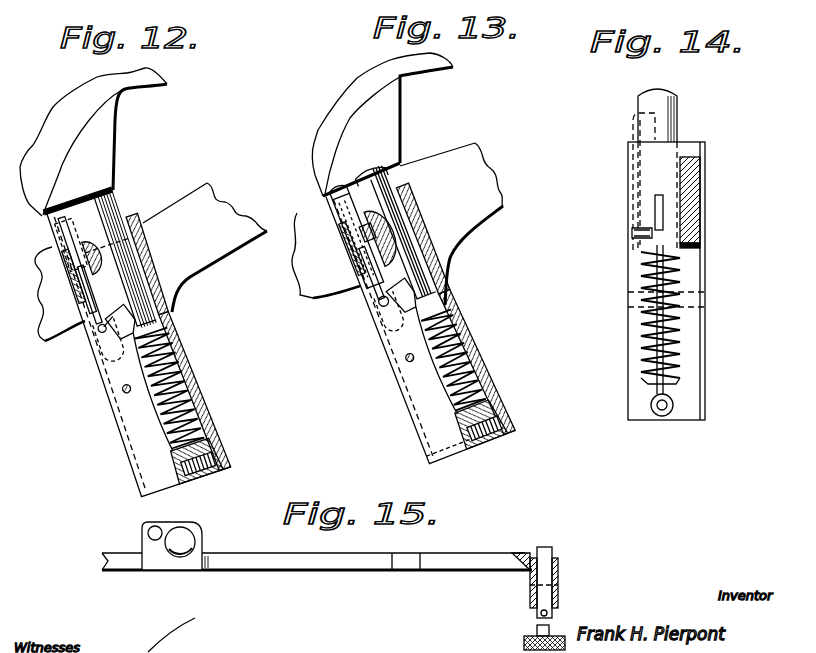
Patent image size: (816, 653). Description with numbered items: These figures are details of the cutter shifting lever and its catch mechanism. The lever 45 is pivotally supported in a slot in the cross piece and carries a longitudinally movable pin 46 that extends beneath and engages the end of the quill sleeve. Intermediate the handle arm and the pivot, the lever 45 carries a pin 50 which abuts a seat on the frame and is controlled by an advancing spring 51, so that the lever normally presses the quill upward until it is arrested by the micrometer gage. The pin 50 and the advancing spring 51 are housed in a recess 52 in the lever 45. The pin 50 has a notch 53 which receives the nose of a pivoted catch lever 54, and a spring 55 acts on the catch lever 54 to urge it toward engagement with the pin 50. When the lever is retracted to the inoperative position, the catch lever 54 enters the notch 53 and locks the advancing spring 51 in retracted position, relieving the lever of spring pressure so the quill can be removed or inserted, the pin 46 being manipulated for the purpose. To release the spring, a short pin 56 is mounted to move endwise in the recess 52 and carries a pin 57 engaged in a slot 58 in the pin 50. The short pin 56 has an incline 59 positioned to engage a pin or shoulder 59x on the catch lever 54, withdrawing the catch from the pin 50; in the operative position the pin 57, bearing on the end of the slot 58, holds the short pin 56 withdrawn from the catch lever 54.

In FIG. 12, the lever 45 is at (151, 324).
In FIG. 13, the lever 45 is at (416, 291).
In FIG. 14, the lever 45 is at (693, 218).
In FIG. 15, the lever 45 is at (328, 564).
In FIG. 15, the longitudinally movable pin 46 is at (549, 552).
In FIG. 12, the pin 50 is at (101, 220).
In FIG. 13, the pin 50 is at (393, 186).
In FIG. 14, the pin 50 is at (668, 124).
In FIG. 15, the pin 50 is at (196, 540).
In FIG. 12, the advancing spring 51 is at (187, 390).
In FIG. 13, the advancing spring 51 is at (460, 320).
In FIG. 14, the advancing spring 51 is at (668, 276).
In FIG. 12, the recess 52 is at (213, 437).
In FIG. 13, the recess 52 is at (483, 397).
In FIG. 14, the recess 52 is at (672, 380).
In FIG. 12, the notch 53 is at (123, 323).
In FIG. 13, the notch 53 is at (403, 297).
In FIG. 12, the catch lever 54 is at (140, 413).
In FIG. 13, the catch lever 54 is at (407, 373).
In FIG. 14, the catch lever 54 is at (654, 394).
In FIG. 12, the spring 55 is at (227, 463).
In FIG. 13, the spring 55 is at (470, 447).
In FIG. 12, the short pin 56 is at (68, 214).
In FIG. 13, the short pin 56 is at (337, 207).
In FIG. 14, the short pin 56 is at (630, 130).
In FIG. 15, the short pin 56 is at (150, 535).
In FIG. 12, the pin 57 is at (112, 197).
In FIG. 13, the pin 57 is at (360, 240).
In FIG. 13, the slot 58 is at (380, 263).
In FIG. 12, the incline 59 is at (100, 323).
In FIG. 13, the incline 59 is at (370, 283).
In FIG. 12, the pin or shoulder 59x is at (100, 333).
In FIG. 13, the pin or shoulder 59x is at (380, 287).
In FIG. 14, the pin or shoulder 59x is at (632, 237).